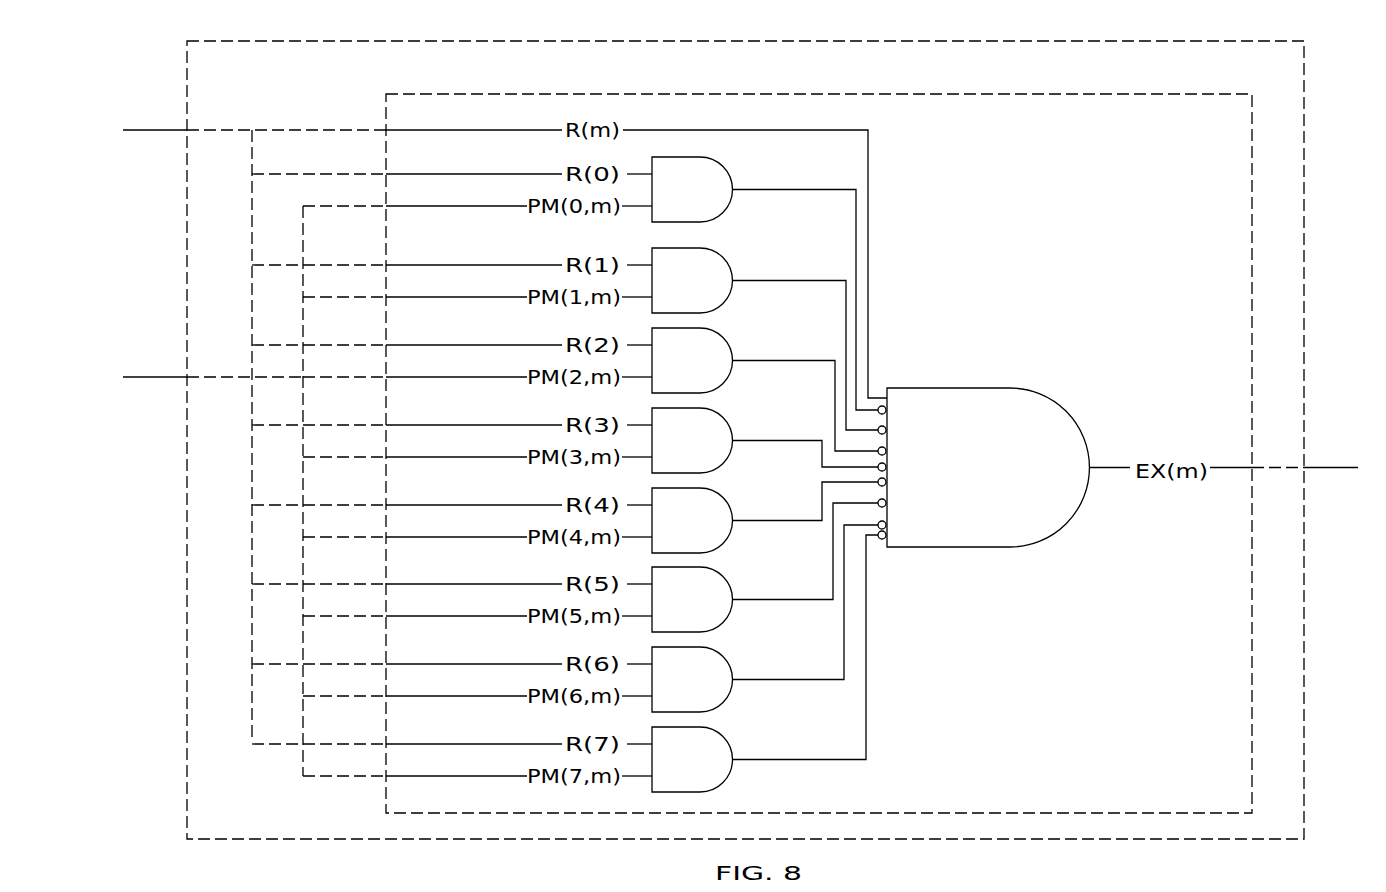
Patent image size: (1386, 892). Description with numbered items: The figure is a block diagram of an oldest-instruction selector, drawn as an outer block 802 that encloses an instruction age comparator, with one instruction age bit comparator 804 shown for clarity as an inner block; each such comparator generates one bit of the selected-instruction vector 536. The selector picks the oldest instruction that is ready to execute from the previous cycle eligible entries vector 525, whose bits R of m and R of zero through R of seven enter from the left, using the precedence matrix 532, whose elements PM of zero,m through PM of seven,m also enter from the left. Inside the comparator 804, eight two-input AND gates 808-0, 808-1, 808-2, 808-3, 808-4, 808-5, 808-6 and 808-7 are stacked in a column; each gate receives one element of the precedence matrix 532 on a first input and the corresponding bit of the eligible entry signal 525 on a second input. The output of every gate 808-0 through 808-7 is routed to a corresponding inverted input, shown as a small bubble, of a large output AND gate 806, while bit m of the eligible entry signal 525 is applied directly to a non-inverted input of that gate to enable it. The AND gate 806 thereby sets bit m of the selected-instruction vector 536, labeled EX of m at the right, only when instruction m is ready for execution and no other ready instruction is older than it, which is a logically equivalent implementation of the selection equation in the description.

The exclusion logic block 802 is at (470, 41).
The instruction age bit comparator 804 is at (688, 94).
The AND gate 806 is at (1036, 396).
The AND gate 808-0 is at (719, 166).
The AND gate 808-1 is at (719, 257).
The AND gate 808-2 is at (719, 337).
The AND gate 808-3 is at (719, 417).
The AND gate 808-4 is at (719, 497).
The AND gate 808-5 is at (719, 576).
The AND gate 808-6 is at (719, 656).
The AND gate 808-7 is at (719, 736).
The previous cycle eligible entries vector 525 is at (180, 132).
The precedence matrix 532 is at (180, 379).
The selected-instruction vector 536 is at (1322, 468).